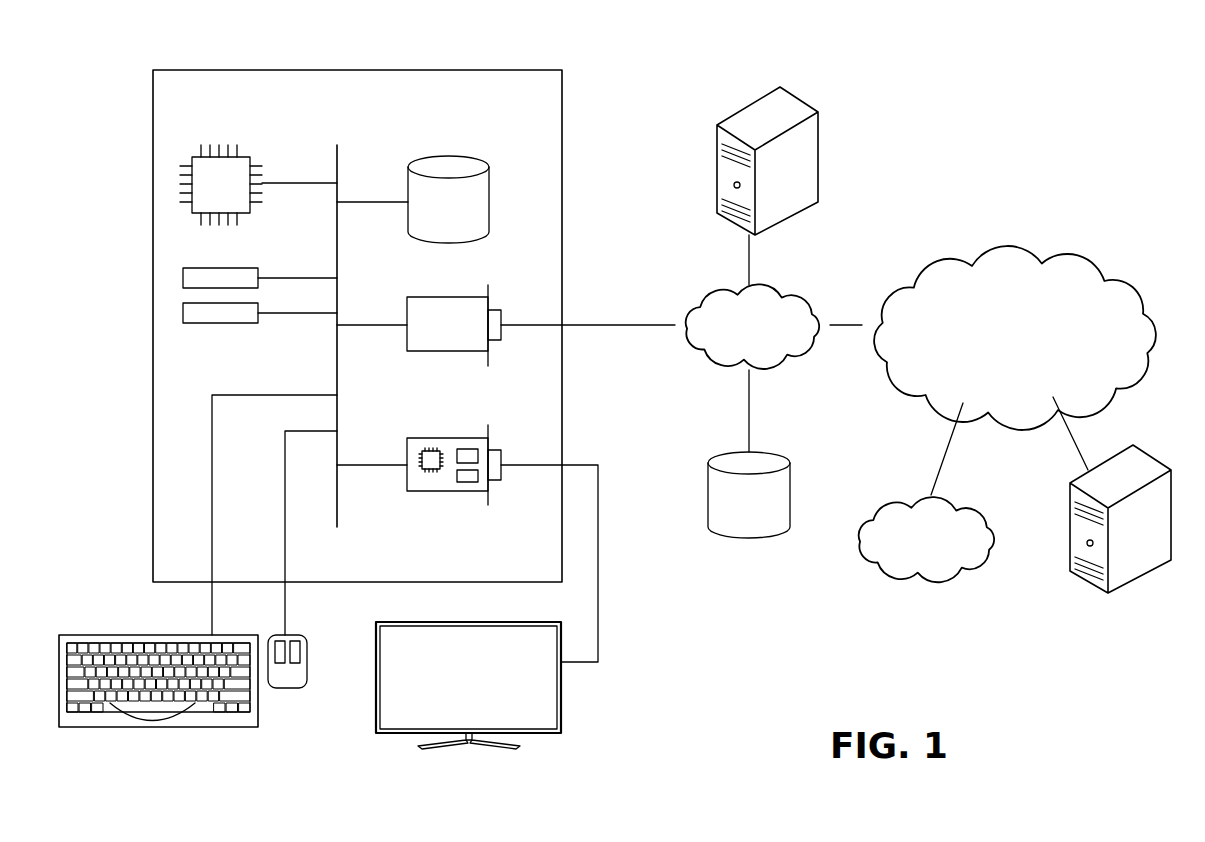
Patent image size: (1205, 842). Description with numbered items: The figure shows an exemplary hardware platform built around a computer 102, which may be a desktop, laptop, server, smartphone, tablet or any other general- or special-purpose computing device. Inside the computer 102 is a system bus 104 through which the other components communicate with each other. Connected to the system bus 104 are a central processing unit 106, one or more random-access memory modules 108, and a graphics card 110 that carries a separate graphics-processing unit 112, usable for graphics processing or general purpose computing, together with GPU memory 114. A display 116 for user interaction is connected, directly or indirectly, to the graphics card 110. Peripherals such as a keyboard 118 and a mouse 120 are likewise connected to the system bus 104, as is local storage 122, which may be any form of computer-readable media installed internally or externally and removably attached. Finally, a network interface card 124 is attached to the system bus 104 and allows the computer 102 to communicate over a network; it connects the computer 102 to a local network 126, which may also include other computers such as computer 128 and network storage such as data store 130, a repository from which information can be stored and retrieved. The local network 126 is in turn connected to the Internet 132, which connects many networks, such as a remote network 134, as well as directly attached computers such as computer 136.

The computer 102 is at (517, 69).
The system bus 104 is at (338, 155).
The central processing unit 106 is at (243, 153).
The random-access memory modules 108 is at (260, 310).
The graphics card 110 is at (467, 527).
The graphics-processing unit 112 is at (430, 472).
The GPU memory 114 is at (464, 485).
The display 116 is at (563, 713).
The keyboard 118 is at (160, 727).
The mouse 120 is at (285, 688).
The local storage 122 is at (491, 185).
The network interface card 124 is at (406, 307).
The local network 126 is at (800, 283).
The computer 128 is at (800, 100).
The data store 130 is at (783, 452).
The Internet 132 is at (1055, 245).
The remote network 134 is at (980, 497).
The computer 136 is at (1147, 453).